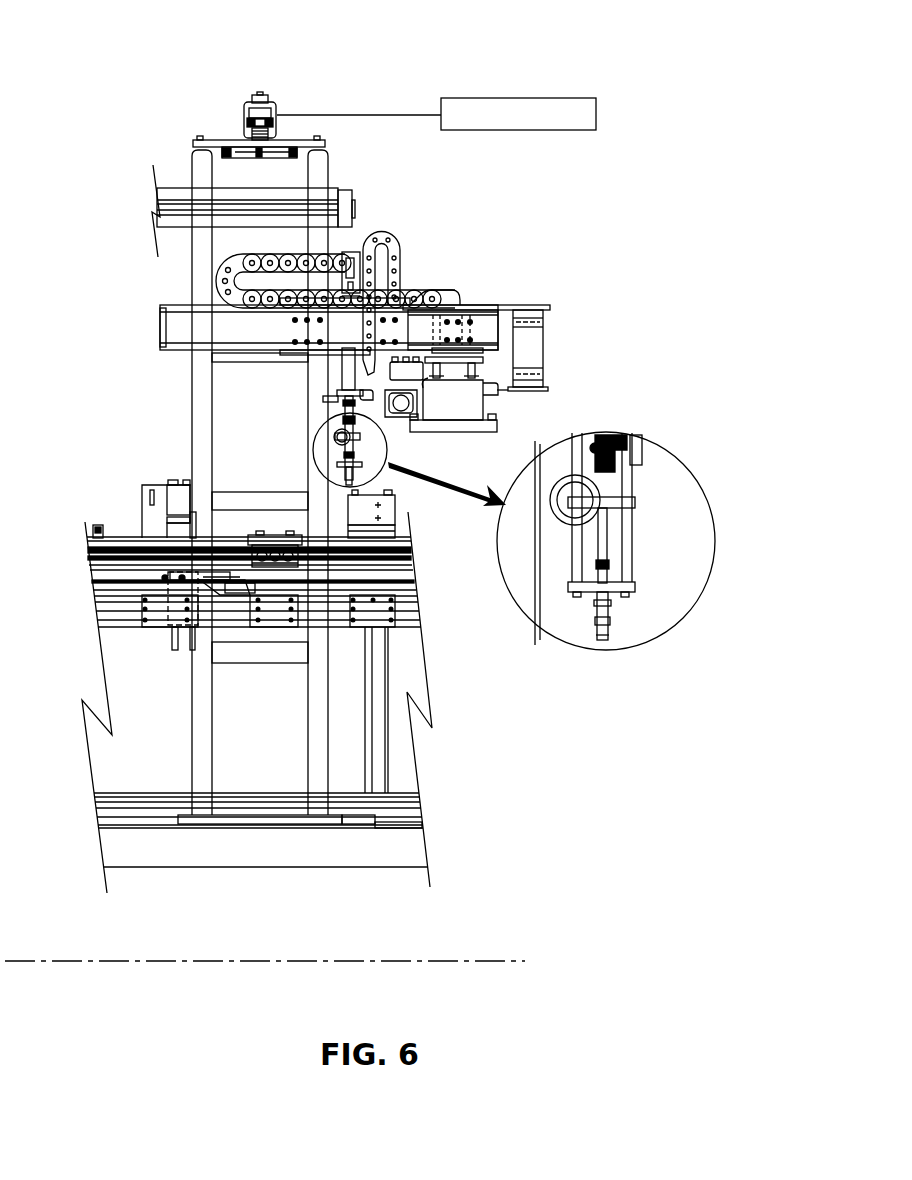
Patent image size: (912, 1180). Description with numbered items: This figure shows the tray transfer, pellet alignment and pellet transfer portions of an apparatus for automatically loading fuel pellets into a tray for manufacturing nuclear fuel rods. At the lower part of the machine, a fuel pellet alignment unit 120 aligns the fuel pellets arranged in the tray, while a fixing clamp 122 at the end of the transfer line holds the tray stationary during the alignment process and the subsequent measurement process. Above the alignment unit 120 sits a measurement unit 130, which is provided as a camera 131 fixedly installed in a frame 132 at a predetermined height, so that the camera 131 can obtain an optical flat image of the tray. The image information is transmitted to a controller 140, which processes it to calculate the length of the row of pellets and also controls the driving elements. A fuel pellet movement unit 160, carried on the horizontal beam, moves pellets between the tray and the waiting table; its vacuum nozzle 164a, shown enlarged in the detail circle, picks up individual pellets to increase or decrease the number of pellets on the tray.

The measurement unit 130 is at (257, 86).
The camera 131 is at (267, 100).
The frame 132 is at (243, 133).
The controller 140 is at (485, 100).
The fuel pellet movement unit 160 is at (426, 275).
The fuel pellet alignment unit 120 is at (203, 522).
The fixing clamp 122 is at (280, 537).
The vacuum nozzle 164a is at (610, 613).